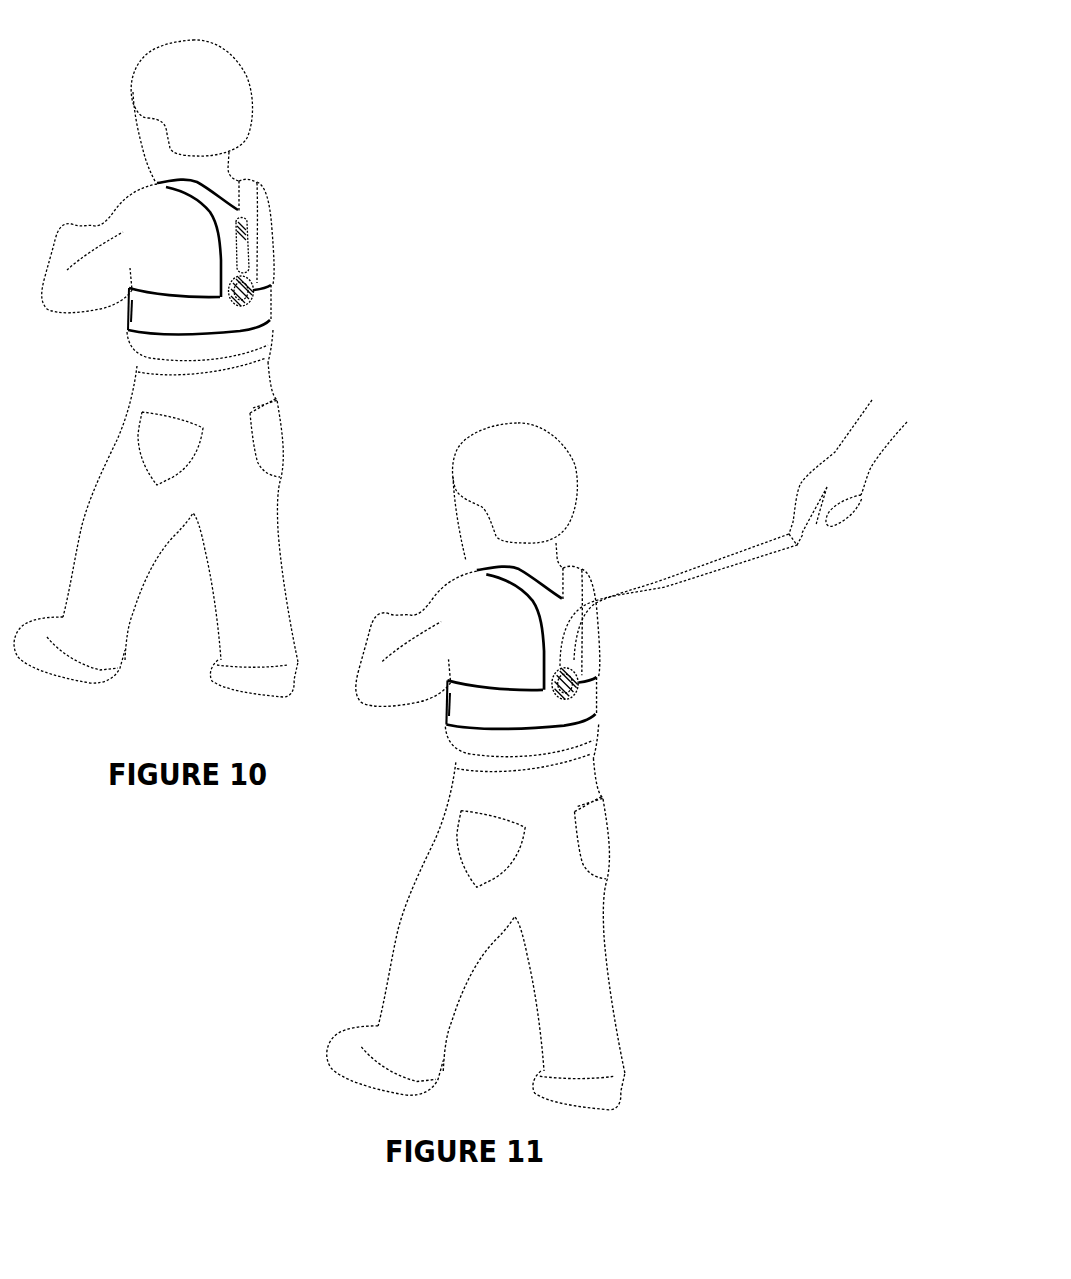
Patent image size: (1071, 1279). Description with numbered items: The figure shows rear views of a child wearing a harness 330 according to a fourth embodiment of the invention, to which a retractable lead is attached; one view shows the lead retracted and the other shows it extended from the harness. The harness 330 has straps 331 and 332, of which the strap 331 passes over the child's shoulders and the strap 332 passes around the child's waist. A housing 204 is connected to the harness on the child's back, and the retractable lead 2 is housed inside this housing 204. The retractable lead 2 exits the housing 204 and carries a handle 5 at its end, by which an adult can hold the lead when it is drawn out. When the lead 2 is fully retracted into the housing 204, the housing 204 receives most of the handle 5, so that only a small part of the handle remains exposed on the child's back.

In FIG. 11, the retractable lead 2 is at (609, 605).
In FIG. 10, the handle 5 is at (244, 240).
In FIG. 11, the handle 5 is at (802, 526).
In FIG. 10, the housing 204 is at (250, 292).
In FIG. 11, the housing 204 is at (582, 687).
In FIG. 10, the harness 330 is at (250, 318).
In FIG. 11, the harness 330 is at (578, 710).
In FIG. 10, the strap 331 is at (185, 182).
In FIG. 11, the strap 331 is at (512, 576).
In FIG. 10, the strap 332 is at (138, 310).
In FIG. 11, the strap 332 is at (466, 699).